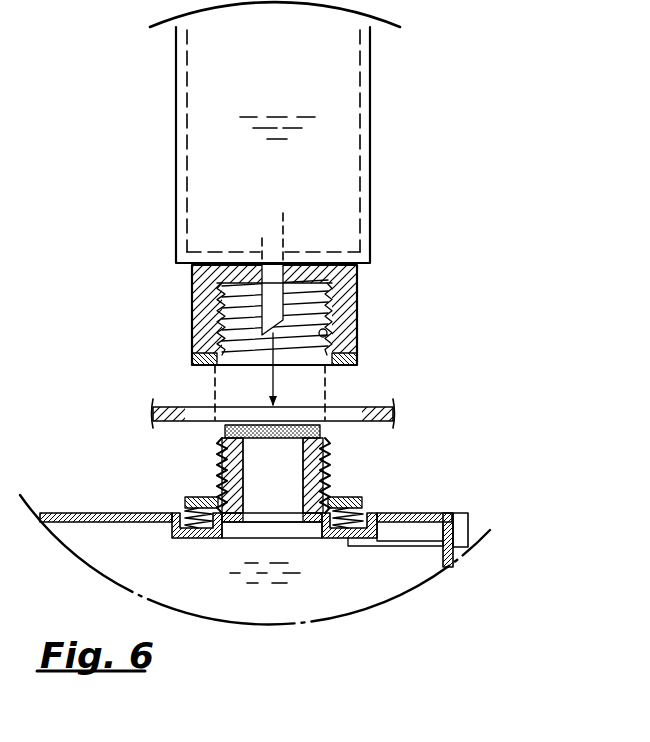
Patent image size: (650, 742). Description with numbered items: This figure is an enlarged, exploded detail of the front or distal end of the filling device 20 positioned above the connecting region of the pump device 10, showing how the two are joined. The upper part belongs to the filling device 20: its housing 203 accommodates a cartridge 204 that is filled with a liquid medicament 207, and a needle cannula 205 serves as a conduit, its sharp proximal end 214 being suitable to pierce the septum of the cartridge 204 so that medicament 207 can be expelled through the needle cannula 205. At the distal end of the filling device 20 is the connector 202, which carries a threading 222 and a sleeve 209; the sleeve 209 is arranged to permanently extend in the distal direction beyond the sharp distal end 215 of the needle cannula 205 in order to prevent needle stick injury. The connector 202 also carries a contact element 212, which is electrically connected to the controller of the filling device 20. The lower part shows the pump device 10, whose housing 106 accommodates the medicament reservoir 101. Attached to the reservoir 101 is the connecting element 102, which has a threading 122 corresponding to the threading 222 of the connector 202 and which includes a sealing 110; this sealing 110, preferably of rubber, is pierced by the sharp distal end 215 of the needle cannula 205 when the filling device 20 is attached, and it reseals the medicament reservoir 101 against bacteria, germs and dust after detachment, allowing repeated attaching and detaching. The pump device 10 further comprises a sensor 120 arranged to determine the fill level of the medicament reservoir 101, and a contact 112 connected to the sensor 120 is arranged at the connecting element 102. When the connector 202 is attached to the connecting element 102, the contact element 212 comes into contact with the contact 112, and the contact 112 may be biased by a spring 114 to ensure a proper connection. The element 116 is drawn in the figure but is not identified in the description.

The filling device 20 is at (173, 192).
The housing 203 is at (370, 133).
The cartridge 204 is at (360, 78).
The needle cannula 205 is at (343, 260).
The sharp proximal end 214 is at (262, 238).
The medicament 207 is at (273, 113).
The connector 202 is at (362, 307).
The sleeve 209 is at (193, 320).
The sharp distal end 215 is at (262, 335).
The contact element 212 is at (192, 356).
The threading 222 is at (327, 334).
The pump device 10 is at (81, 440).
The housing 106 is at (176, 406).
The sealing 110 is at (310, 425).
The connecting element 102 is at (337, 457).
The threading 122 is at (214, 467).
The contact 112 is at (203, 511).
The spring 114 is at (353, 511).
The medicament reservoir 101 is at (172, 573).
The flange 116 is at (397, 548).
The sensor 120 is at (460, 545).